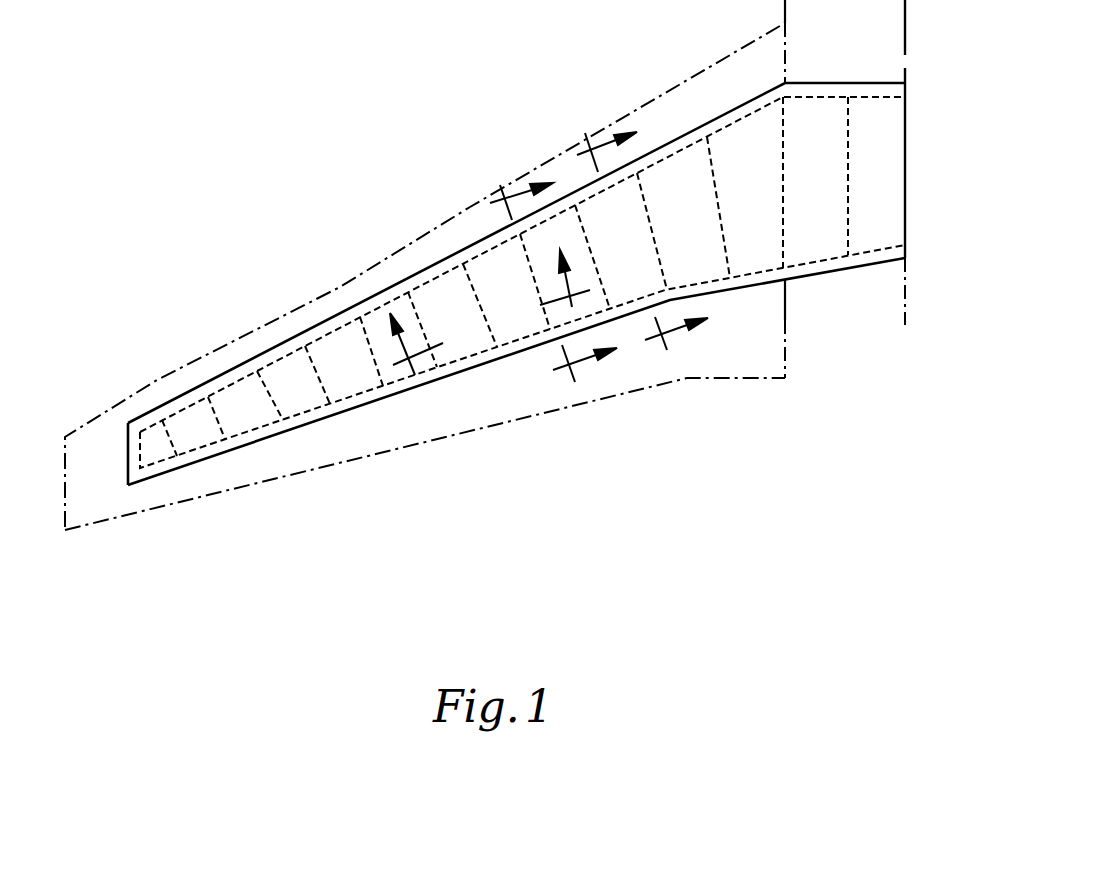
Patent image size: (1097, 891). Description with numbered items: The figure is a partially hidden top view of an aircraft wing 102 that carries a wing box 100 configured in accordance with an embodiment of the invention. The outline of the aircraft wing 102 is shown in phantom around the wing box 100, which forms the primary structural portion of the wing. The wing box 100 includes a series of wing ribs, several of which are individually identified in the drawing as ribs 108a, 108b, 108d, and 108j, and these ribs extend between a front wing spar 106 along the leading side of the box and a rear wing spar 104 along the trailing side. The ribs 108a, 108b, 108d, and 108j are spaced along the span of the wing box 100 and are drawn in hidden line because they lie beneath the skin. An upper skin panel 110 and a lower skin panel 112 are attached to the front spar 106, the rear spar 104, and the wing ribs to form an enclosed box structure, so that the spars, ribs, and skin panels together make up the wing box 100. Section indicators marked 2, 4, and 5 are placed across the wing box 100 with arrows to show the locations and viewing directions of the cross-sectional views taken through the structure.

The wing box 100 is at (330, 322).
The aircraft wing 102 is at (174, 374).
The rear wing spar 104 is at (425, 365).
The front wing spar 106 is at (437, 276).
The wing rib 108a is at (773, 282).
The wing rib 108b is at (653, 213).
The wing rib 108d is at (527, 268).
The wing rib 108j is at (175, 437).
The upper skin panel 110 is at (300, 402).
The lower skin panel 112 is at (297, 380).
The section line for FIG. 2 is at (642, 241).
The section line for FIG. 4 is at (553, 283).
The section line for FIG. 5 is at (491, 318).